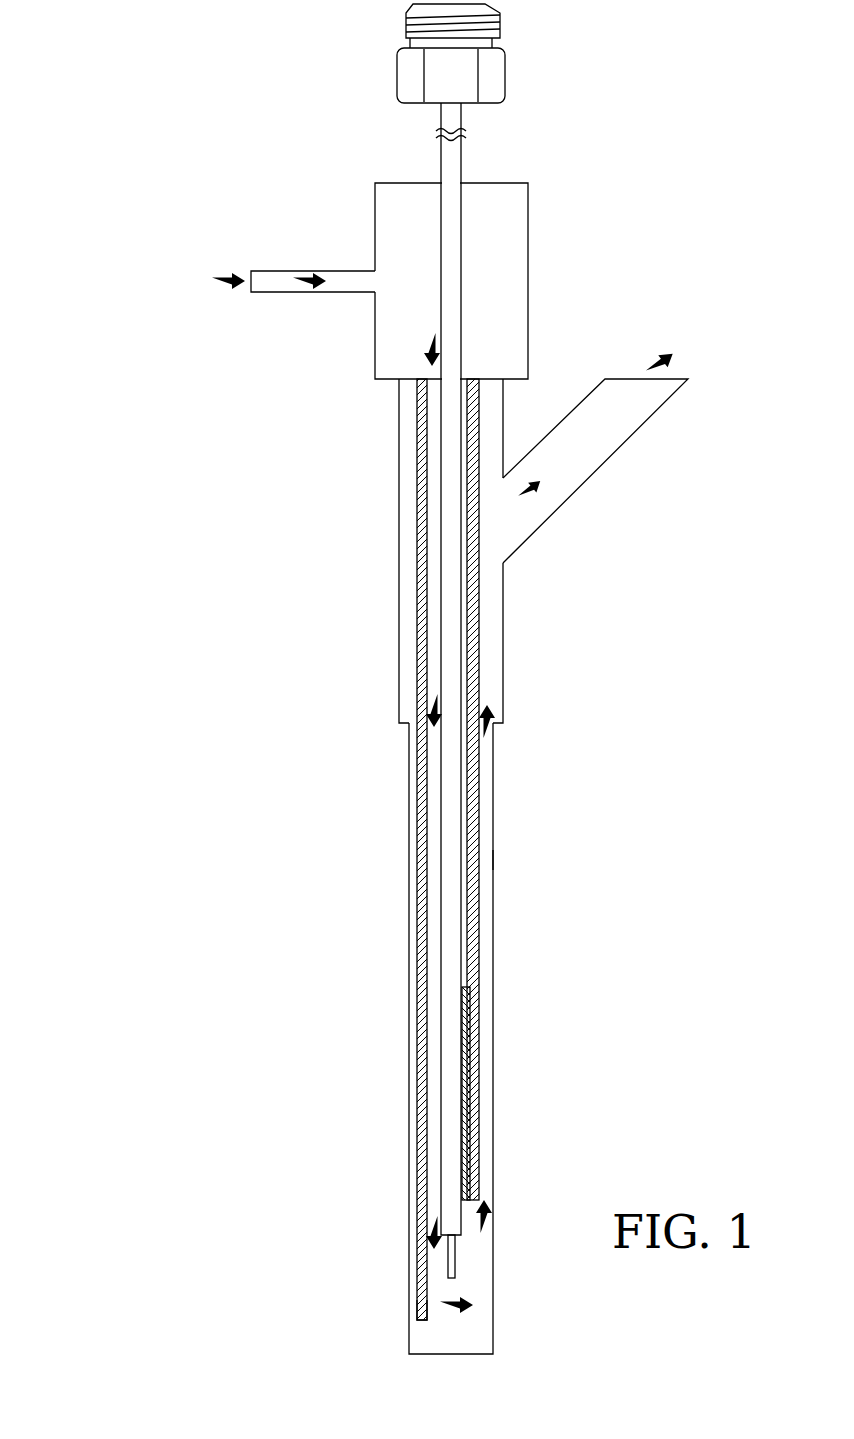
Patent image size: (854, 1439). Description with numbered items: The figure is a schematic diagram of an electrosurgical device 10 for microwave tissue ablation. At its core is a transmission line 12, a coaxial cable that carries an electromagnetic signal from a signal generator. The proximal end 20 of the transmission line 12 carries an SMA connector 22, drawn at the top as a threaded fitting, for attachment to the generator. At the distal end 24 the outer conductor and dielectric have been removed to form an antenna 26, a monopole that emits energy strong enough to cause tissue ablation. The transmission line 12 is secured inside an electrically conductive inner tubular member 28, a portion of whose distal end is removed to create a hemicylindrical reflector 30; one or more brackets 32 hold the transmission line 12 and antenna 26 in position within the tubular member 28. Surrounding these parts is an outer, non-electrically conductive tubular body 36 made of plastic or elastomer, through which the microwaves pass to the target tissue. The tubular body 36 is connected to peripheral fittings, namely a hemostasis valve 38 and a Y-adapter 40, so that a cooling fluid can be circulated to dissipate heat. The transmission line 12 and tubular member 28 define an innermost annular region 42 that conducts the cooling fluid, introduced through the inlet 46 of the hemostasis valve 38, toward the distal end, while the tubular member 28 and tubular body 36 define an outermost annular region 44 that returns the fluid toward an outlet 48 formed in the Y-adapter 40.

The electrosurgical device 10 is at (103, 406).
The transmission line 12 is at (452, 660).
The proximal end 20 is at (499, 53).
The SMA connector 22 is at (408, 22).
The distal end 24 is at (497, 1260).
The antenna 26 is at (448, 1263).
The inner tubular member 28 is at (448, 558).
The hemicylindrical reflector 30 is at (417, 1290).
The bracket 32 is at (466, 1032).
The tubular body 36 is at (409, 797).
The hemostasis valve 38 is at (375, 236).
The Y-adapter 40 is at (399, 598).
The innermost annular region 42 is at (430, 973).
The outermost annular region 44 is at (493, 858).
The inlet 46 is at (272, 270).
The outlet 48 is at (612, 456).